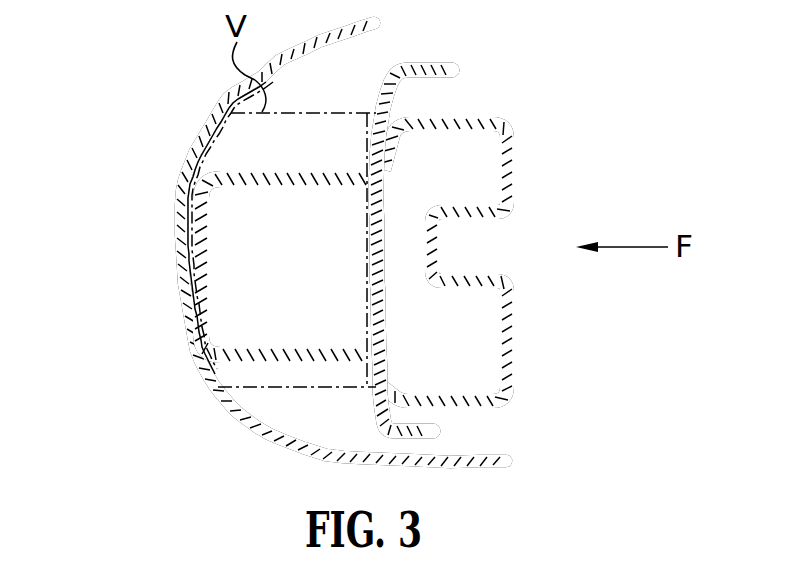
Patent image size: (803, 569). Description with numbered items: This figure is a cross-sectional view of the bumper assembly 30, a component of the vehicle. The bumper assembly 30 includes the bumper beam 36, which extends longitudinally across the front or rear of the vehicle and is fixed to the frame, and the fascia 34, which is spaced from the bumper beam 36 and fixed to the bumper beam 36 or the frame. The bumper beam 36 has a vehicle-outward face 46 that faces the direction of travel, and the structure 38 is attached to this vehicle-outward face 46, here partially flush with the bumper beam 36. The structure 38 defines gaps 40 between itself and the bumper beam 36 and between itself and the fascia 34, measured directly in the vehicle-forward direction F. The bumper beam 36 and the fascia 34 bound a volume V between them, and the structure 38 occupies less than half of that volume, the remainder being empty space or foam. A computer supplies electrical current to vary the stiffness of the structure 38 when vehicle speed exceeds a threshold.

The bumper assembly 30 is at (163, 384).
The fascia 34 is at (243, 150).
The bumper beam 36 is at (512, 158).
The structure 38 is at (250, 343).
The gaps 40 is at (243, 213).
The vehicle-outward face 46 is at (370, 262).